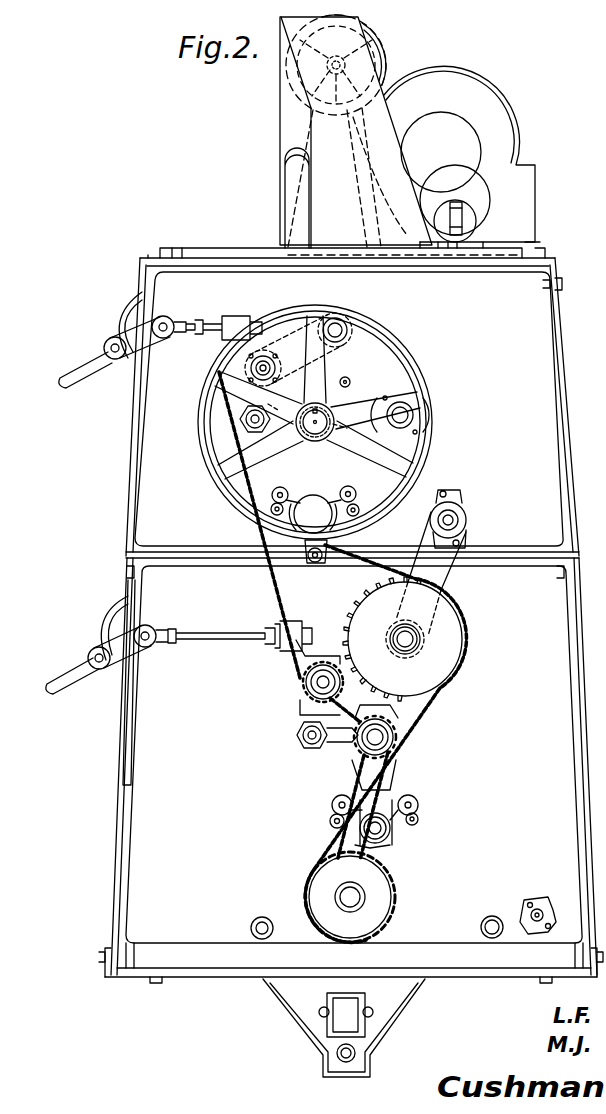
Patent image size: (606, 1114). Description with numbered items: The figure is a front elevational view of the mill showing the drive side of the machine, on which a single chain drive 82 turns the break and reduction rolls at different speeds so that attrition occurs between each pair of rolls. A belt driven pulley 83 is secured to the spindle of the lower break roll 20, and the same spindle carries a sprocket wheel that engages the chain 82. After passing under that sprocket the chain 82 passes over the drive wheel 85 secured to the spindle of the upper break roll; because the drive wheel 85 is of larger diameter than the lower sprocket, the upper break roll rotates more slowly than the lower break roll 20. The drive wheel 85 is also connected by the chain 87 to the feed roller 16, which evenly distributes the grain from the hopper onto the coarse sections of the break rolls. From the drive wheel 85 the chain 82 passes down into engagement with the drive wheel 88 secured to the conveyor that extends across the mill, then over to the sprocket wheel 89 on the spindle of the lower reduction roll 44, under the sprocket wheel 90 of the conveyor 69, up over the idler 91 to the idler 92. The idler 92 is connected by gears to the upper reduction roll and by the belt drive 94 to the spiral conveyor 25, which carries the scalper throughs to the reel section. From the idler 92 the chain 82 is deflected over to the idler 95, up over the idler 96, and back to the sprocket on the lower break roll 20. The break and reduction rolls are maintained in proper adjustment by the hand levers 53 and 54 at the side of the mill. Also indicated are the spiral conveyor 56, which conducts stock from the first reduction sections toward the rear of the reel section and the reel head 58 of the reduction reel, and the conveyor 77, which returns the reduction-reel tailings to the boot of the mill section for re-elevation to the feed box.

The feed roller 16 is at (315, 410).
The break roll 20 is at (310, 436).
The spiral conveyor 25 is at (454, 515).
The reduction roll 44 is at (392, 755).
The hand lever 53 is at (82, 362).
The hand lever 54 is at (62, 677).
The spiral conveyor 56 is at (256, 922).
The reel head 58 is at (305, 683).
The conveyor 69 is at (343, 897).
The conveyor 77 is at (486, 931).
The chain drive 82 is at (437, 710).
The belt driven pulley 83 is at (383, 337).
The drive wheel 85 is at (240, 356).
The chain 87 is at (290, 330).
The drive wheel 88 is at (302, 726).
The sprocket wheel 89 is at (367, 746).
The sprocket wheel 90 is at (382, 895).
The idler 91 is at (386, 832).
The idler 92 is at (461, 614).
The belt drive 94 is at (462, 544).
The idler 95 is at (263, 538).
The idler 96 is at (412, 405).